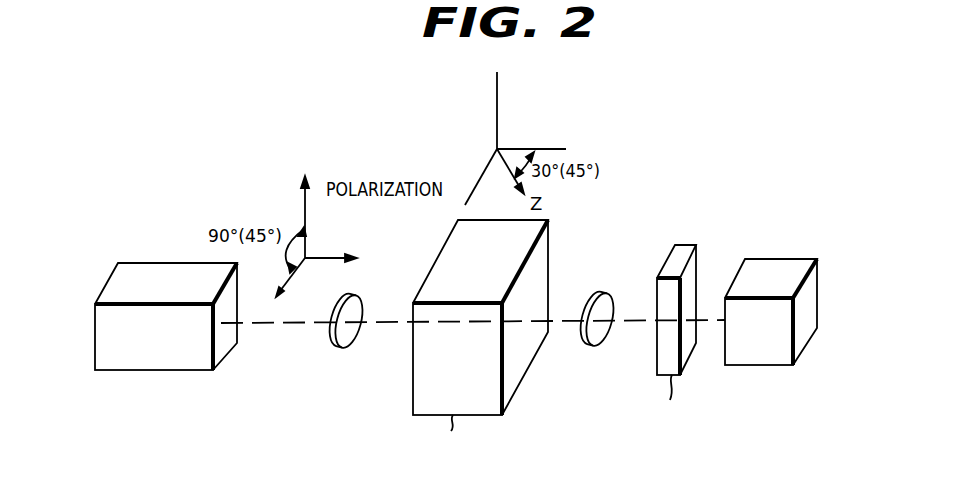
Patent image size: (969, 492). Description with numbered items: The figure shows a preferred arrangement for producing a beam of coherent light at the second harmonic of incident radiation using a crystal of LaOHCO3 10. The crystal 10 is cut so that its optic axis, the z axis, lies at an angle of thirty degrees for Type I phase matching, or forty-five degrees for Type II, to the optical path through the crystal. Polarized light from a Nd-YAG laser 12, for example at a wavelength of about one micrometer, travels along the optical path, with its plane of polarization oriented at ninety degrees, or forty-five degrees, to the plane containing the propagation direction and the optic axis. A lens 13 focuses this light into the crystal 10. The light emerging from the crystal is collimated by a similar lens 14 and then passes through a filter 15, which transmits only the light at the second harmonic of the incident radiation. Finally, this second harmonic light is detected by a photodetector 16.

The crystal of LaOHCO3 10 is at (490, 270).
The Nd-YAG laser 12 is at (142, 370).
The lens 13 is at (334, 347).
The lens 14 is at (591, 345).
The filter 15 is at (686, 245).
The photodetector 16 is at (770, 345).